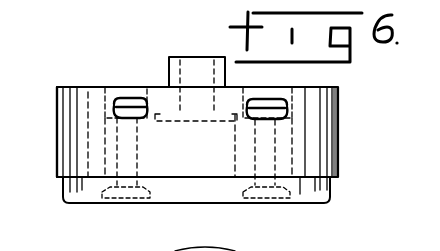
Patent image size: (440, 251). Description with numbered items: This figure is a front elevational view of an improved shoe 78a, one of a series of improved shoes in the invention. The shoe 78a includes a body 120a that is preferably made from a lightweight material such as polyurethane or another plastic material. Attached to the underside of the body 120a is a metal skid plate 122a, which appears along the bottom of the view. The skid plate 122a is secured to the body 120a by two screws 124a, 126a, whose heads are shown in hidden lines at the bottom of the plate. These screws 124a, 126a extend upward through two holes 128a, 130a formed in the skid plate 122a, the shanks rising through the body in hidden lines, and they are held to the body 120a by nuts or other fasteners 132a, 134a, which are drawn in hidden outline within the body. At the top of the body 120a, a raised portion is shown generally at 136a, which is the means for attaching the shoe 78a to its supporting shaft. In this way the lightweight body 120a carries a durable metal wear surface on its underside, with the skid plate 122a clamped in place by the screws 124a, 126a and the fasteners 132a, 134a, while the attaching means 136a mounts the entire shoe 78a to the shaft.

The shoe 78a is at (52, 115).
The body 120a is at (335, 137).
The metal skid plate 122a is at (330, 195).
The screw 124a is at (121, 208).
The screw 126a is at (273, 208).
The hole 128a is at (138, 208).
The hole 130a is at (283, 208).
The nut 132a is at (147, 88).
The nut 134a is at (290, 87).
The means for attaching the shoe to the shaft 136a is at (217, 31).